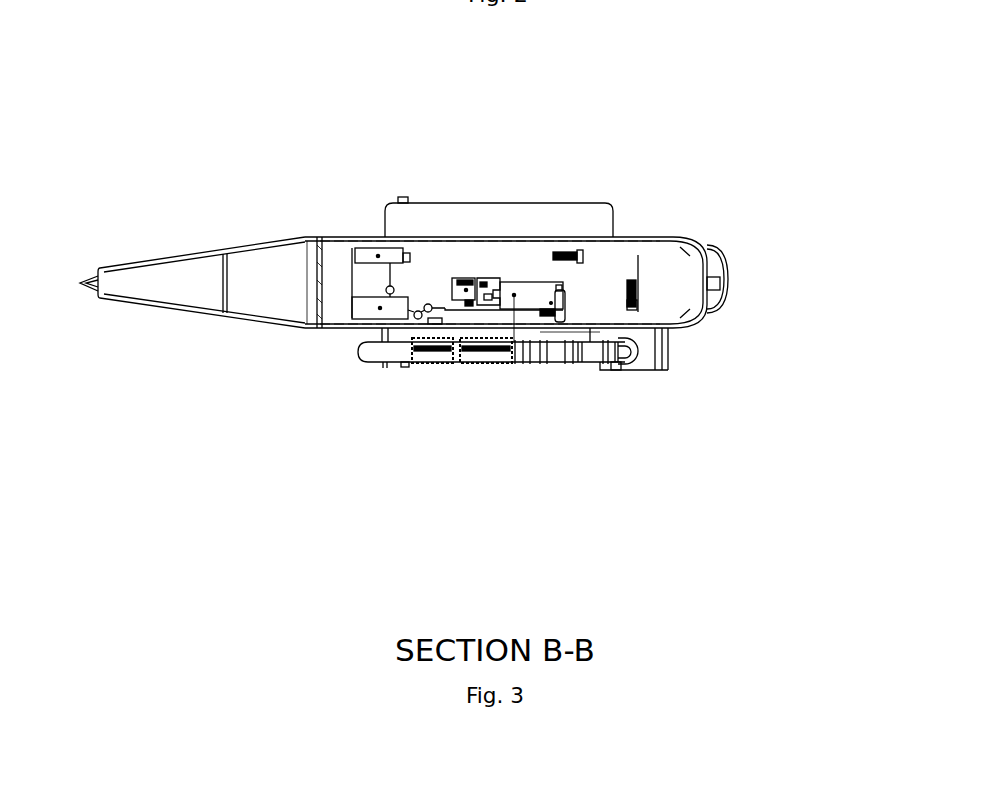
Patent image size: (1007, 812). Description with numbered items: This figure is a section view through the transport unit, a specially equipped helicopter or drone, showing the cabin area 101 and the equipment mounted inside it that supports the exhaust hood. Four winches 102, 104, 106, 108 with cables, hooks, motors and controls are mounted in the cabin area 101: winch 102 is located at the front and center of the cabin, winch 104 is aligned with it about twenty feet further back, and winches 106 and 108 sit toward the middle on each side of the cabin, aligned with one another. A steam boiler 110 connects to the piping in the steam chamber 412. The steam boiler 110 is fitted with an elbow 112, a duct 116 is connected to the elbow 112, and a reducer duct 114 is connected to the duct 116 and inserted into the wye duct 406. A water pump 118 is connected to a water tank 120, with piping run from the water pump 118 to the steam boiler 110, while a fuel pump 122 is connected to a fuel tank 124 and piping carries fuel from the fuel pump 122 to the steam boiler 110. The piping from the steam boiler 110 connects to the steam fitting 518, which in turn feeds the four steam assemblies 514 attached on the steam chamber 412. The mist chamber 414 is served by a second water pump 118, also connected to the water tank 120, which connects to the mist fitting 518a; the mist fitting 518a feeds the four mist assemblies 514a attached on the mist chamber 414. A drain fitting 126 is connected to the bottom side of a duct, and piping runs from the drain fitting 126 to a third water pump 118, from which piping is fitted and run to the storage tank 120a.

The cabin area 101 is at (617, 250).
The winch 102 is at (640, 297).
The winch 104 is at (473, 305).
The winch 106 is at (570, 250).
The winch 108 is at (617, 330).
The steam boiler 110 is at (529, 290).
The elbow 112 is at (567, 283).
The reducer duct 114 is at (616, 372).
The duct 116 is at (562, 306).
The water pump 118 is at (386, 288).
The water tank 120 is at (352, 316).
The storage tank 120a is at (372, 245).
The fuel pump 122 is at (478, 283).
The fuel tank 124 is at (460, 278).
The drain fitting 126 is at (362, 312).
The wye duct 406 is at (565, 333).
The steam chamber 412 is at (497, 363).
The mist chamber 414 is at (420, 363).
The steam assemblies 514 is at (470, 363).
The mist assemblies 514a is at (405, 364).
The steam fitting 518 is at (543, 363).
The mist fitting 518a is at (440, 323).